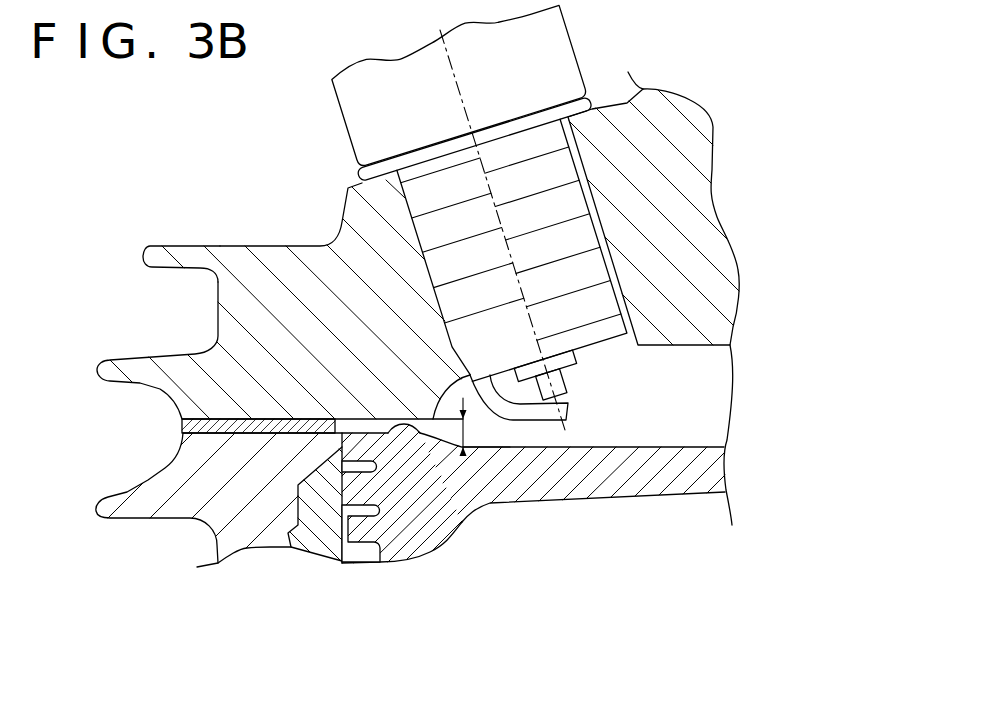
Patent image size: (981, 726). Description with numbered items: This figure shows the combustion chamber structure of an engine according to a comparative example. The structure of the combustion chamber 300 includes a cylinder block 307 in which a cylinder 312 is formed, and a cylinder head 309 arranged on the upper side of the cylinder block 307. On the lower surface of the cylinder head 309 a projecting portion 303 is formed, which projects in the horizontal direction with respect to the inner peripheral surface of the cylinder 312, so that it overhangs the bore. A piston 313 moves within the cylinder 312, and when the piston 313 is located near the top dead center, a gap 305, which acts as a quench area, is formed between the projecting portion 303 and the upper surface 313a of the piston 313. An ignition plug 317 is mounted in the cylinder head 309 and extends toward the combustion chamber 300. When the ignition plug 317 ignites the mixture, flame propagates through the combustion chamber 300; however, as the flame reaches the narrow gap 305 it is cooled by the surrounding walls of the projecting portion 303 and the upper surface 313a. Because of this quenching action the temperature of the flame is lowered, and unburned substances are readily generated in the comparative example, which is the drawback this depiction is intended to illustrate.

The combustion chamber 300 is at (717, 398).
The projecting portion 303 is at (277, 260).
The gap 305 is at (466, 426).
The cylinder block 307 is at (118, 507).
The cylinder head 309 is at (157, 252).
The cylinder 312 is at (317, 543).
The piston 313 is at (622, 487).
The upper surface 313a is at (418, 434).
The ignition plug 317 is at (352, 119).